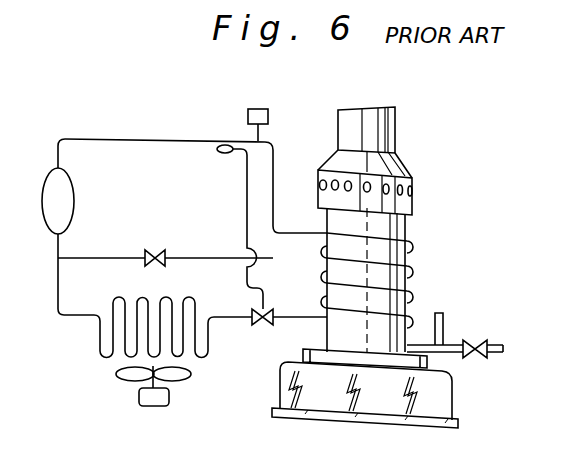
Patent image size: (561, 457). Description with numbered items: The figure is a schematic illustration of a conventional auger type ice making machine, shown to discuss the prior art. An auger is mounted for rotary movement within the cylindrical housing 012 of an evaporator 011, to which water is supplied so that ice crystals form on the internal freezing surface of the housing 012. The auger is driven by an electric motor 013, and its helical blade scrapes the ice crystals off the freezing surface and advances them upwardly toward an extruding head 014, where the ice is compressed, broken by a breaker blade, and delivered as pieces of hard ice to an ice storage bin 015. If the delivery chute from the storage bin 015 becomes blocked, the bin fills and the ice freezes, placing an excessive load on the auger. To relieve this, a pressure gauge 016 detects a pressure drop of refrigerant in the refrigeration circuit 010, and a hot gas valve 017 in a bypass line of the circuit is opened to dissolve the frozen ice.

The refrigeration circuit 010 is at (153, 137).
The evaporator 011 is at (408, 292).
The cylindrical housing 012 is at (408, 237).
The electric motor 013 is at (453, 393).
The extruding head 014 is at (413, 190).
The ice storage bin 015 is at (395, 110).
The pressure gauge 016 is at (268, 111).
The hot gas valve 017 is at (166, 251).